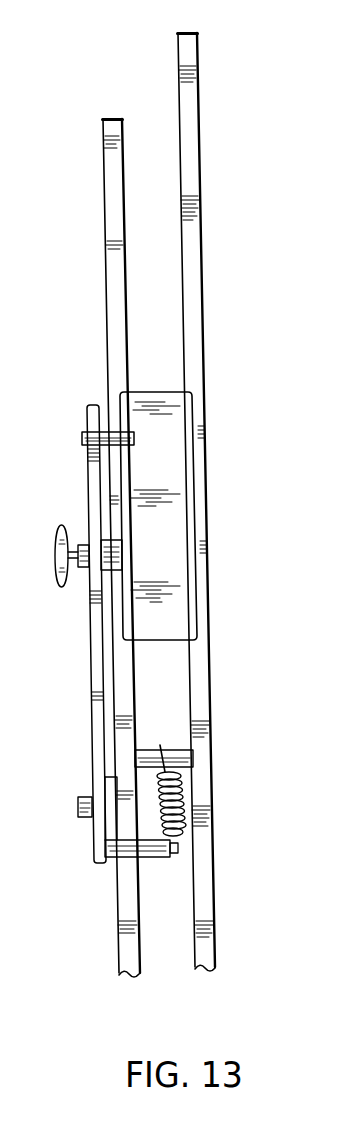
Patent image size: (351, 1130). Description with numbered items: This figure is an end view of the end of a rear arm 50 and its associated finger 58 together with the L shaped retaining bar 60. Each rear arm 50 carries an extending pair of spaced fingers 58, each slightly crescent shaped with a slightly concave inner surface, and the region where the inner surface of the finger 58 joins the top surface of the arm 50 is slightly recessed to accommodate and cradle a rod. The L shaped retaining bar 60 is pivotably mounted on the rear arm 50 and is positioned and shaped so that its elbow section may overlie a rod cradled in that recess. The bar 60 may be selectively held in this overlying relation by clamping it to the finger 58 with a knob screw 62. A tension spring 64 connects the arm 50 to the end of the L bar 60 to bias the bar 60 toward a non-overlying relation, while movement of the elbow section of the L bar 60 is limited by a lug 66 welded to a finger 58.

The rear arm 50 is at (218, 773).
The finger 58 is at (108, 213).
The L shaped retaining bar 60 is at (92, 638).
The knob screw 62 is at (62, 523).
The tension spring 64 is at (178, 822).
The lug 66 is at (82, 438).